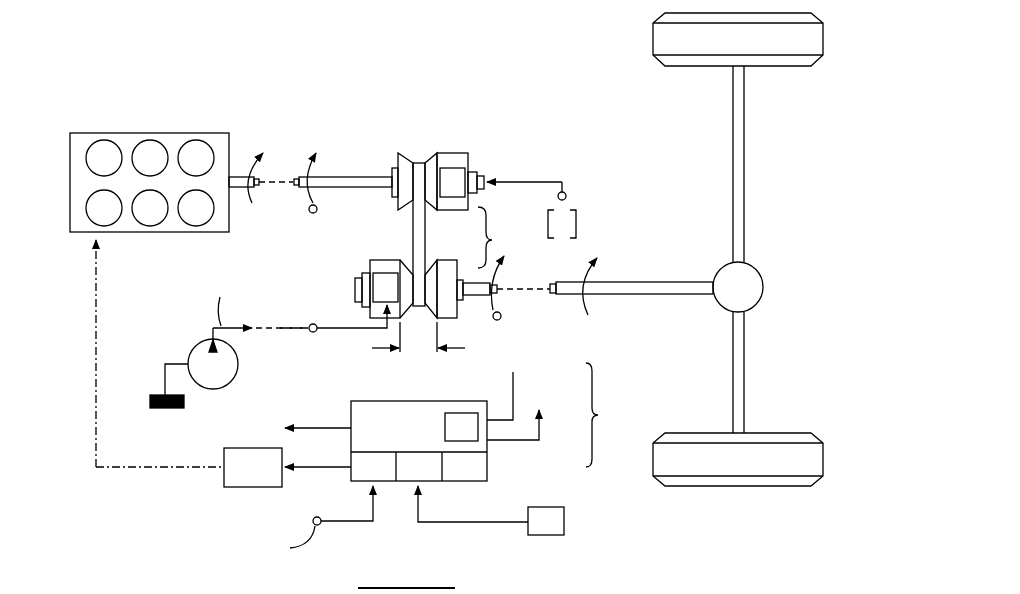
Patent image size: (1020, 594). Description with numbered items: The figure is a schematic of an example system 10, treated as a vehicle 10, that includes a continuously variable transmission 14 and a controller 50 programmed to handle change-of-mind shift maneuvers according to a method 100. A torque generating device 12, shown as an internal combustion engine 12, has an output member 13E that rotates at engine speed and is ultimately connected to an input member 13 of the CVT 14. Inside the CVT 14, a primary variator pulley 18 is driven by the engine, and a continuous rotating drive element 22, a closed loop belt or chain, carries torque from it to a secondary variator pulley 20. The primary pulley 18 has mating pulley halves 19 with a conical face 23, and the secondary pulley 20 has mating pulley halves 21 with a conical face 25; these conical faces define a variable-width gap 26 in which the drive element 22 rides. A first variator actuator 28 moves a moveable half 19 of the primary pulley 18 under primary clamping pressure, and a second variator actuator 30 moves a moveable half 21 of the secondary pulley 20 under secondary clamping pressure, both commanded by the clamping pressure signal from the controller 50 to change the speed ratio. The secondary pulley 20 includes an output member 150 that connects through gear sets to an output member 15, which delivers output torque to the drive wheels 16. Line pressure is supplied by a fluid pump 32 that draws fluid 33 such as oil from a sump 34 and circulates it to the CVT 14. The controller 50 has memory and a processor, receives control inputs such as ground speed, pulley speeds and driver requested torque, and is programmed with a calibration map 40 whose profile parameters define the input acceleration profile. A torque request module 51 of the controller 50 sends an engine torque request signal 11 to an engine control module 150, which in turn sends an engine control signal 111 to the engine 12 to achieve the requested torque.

The system 10 is at (314, 50).
The torque generating device 12 is at (150, 133).
The output member 13E is at (245, 172).
The input member 13 is at (360, 176).
The primary variator pulley 18 is at (471, 100).
The mating pulley halves 19 is at (455, 151).
The conical face 23 is at (437, 161).
The conical face 25 is at (408, 268).
The continuous rotating drive element 22 is at (425, 232).
The first variator actuator 28 is at (462, 192).
The continuously variable transmission 14 is at (495, 237).
The mating pulley halves 21 is at (372, 263).
The second variator actuator 30 is at (395, 297).
The variable-width gap 26 is at (457, 352).
The output member 150 is at (476, 300).
The secondary variator pulley 20 is at (380, 360).
The output member 15 is at (664, 281).
The drive wheels 16 is at (653, 40).
The fluid pump 32 is at (204, 375).
The fluid 33 is at (162, 395).
The sump 34 is at (162, 410).
The engine control signal 111 is at (96, 372).
The engine torque request signal 11 is at (331, 462).
The method 100 is at (419, 441).
The controller 50 is at (426, 441).
The torque request module 51 is at (470, 440).
The calibration map 40 is at (554, 533).